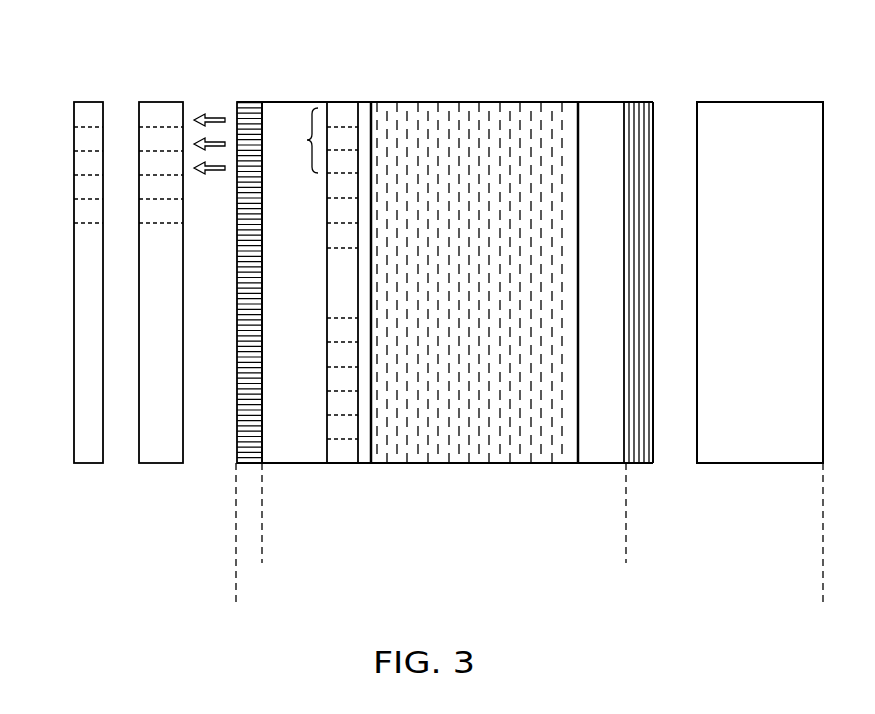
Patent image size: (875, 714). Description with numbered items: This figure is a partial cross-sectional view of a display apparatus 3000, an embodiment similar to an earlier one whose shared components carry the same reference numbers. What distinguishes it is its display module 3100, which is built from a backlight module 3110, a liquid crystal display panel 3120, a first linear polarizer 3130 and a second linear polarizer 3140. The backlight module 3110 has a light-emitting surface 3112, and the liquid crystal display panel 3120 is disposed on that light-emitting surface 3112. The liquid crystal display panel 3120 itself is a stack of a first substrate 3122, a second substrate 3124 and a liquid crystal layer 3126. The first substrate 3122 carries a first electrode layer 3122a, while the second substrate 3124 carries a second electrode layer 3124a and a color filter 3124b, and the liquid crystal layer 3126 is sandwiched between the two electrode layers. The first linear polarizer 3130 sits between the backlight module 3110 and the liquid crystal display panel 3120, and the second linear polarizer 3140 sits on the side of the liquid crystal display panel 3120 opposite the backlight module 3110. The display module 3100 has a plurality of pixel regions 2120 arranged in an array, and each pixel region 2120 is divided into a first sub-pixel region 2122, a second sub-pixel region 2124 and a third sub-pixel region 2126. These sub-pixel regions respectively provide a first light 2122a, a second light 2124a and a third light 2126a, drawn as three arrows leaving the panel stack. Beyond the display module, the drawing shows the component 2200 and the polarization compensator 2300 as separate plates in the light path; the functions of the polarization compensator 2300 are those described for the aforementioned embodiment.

The display apparatus 3000 is at (857, 658).
The display module 3100 is at (815, 586).
The backlight module 3110 is at (762, 453).
The light-emitting surface 3112 is at (695, 135).
The liquid crystal display panel 3120 is at (625, 550).
The first substrate 3122 is at (593, 453).
The first electrode layer 3122a is at (572, 450).
The second substrate 3124 is at (293, 453).
The second electrode layer 3124a is at (363, 462).
The color filter 3124b is at (362, 468).
The liquid crystal layer 3126 is at (455, 455).
The first linear polarizer 3130 is at (645, 443).
The second linear polarizer 3140 is at (245, 448).
The pixel region 2120 is at (294, 140).
The first sub-pixel region 2122 is at (345, 112).
The first light 2122a is at (215, 118).
The second sub-pixel region 2124 is at (350, 140).
The second light 2124a is at (200, 143).
The third sub-pixel region 2126 is at (352, 165).
The third light 2126a is at (212, 172).
The second panel 2200 is at (185, 468).
The polarization compensator 2300 is at (108, 468).